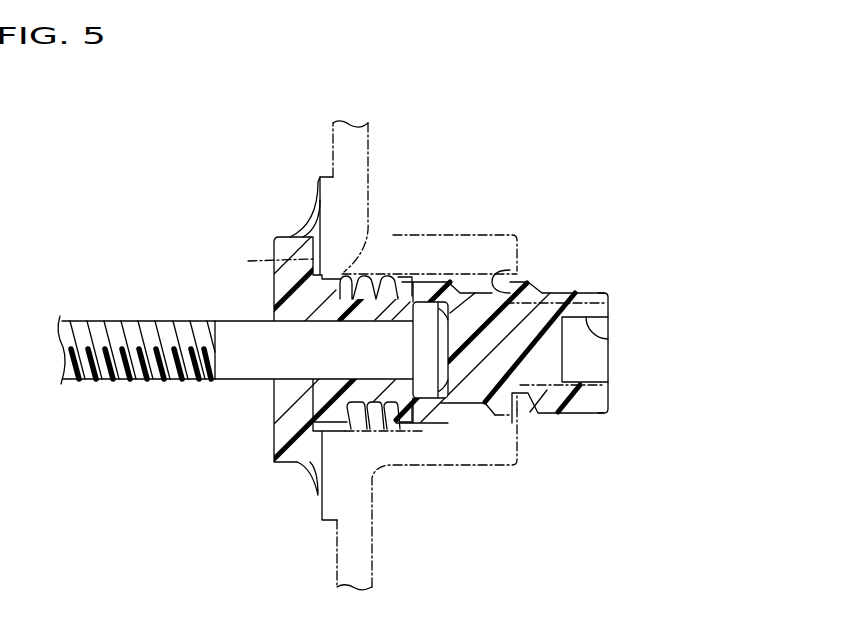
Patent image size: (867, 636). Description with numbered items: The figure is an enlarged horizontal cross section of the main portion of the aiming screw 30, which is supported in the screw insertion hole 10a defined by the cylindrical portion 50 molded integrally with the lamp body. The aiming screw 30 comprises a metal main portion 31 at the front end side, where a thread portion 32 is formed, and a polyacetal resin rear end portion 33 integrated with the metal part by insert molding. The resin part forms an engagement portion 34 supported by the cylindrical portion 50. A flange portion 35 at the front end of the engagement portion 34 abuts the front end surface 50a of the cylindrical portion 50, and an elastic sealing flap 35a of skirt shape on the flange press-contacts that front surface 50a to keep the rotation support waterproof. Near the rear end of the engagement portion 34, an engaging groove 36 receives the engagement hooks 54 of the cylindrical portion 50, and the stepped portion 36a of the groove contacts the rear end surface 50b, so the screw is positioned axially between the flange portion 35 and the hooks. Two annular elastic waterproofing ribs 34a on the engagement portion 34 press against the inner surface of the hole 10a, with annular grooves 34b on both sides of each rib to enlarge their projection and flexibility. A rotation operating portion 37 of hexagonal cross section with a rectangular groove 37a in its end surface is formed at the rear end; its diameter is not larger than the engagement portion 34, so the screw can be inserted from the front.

The aiming screw 30 is at (132, 394).
The metal main portion 31 is at (247, 394).
The thread portion 32 is at (111, 321).
The polyacetal resin rear end portion 33 is at (575, 419).
The engagement portion 34 is at (435, 438).
The waterproofing rib 34a is at (393, 272).
The annular groove 34b is at (360, 440).
The flange portion 35 is at (274, 466).
The elastic sealing flap 35a is at (316, 197).
The engaging groove 36 is at (520, 242).
The stepped portion 36a is at (506, 270).
The rotation operating portion 37 is at (622, 316).
The rectangular groove 37a is at (606, 345).
The cylindrical portion 50 is at (486, 478).
The front end surface of the cylindrical portion 50a is at (248, 261).
The rear end surface of the cylindrical portion 50b is at (522, 440).
The engagement hook 54 is at (614, 393).
The screw insertion hole 10a is at (361, 268).